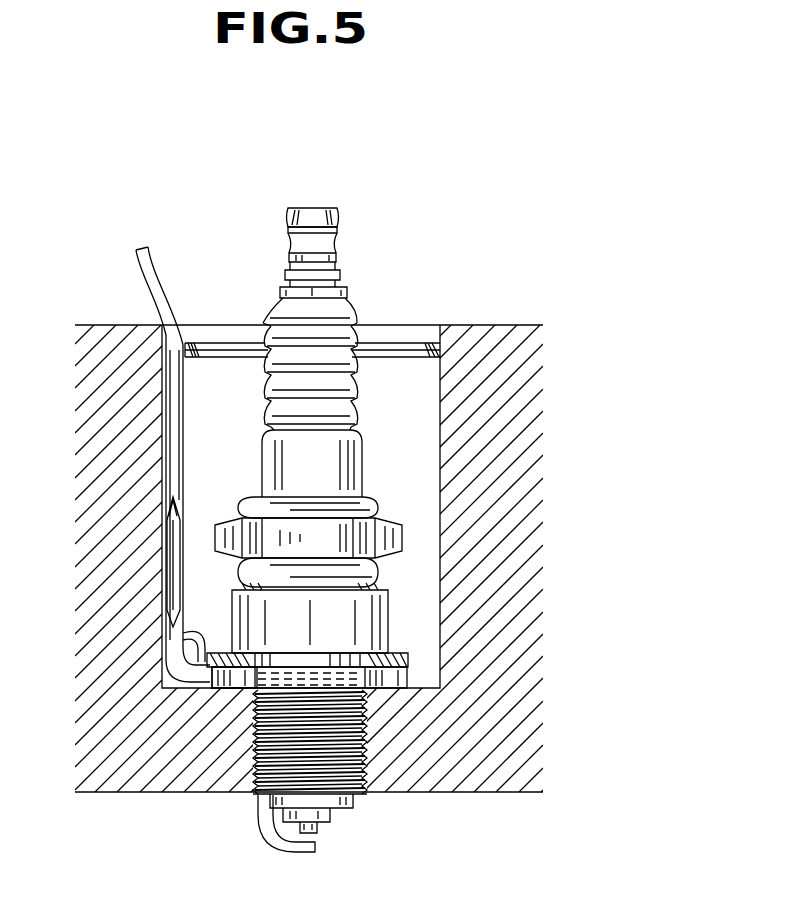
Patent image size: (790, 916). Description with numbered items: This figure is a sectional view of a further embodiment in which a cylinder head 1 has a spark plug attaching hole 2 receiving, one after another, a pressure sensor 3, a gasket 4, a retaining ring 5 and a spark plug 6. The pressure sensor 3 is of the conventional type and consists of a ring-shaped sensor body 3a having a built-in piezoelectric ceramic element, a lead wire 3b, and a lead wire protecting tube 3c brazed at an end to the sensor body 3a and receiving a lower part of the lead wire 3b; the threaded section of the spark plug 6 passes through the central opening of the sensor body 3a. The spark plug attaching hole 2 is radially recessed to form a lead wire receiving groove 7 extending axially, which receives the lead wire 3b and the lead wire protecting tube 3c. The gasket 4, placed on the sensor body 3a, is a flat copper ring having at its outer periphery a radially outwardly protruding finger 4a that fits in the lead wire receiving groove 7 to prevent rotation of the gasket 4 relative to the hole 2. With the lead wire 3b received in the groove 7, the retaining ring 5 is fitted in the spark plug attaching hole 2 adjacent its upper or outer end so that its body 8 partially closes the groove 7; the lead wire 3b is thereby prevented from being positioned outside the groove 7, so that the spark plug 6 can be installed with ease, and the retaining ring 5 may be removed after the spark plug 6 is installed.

The cylinder head 1 is at (480, 342).
The spark plug attaching hole 2 is at (438, 395).
The pressure sensor 3 is at (303, 509).
The sensor body 3a is at (237, 683).
The lead wire 3b is at (150, 292).
The lead wire protecting tube 3c is at (160, 572).
The gasket 4 is at (400, 653).
The finger 4a is at (160, 632).
The retaining ring 5 is at (238, 336).
The spark plug 6 is at (333, 210).
The lead wire receiving groove 7 is at (160, 376).
The body 8 is at (192, 343).